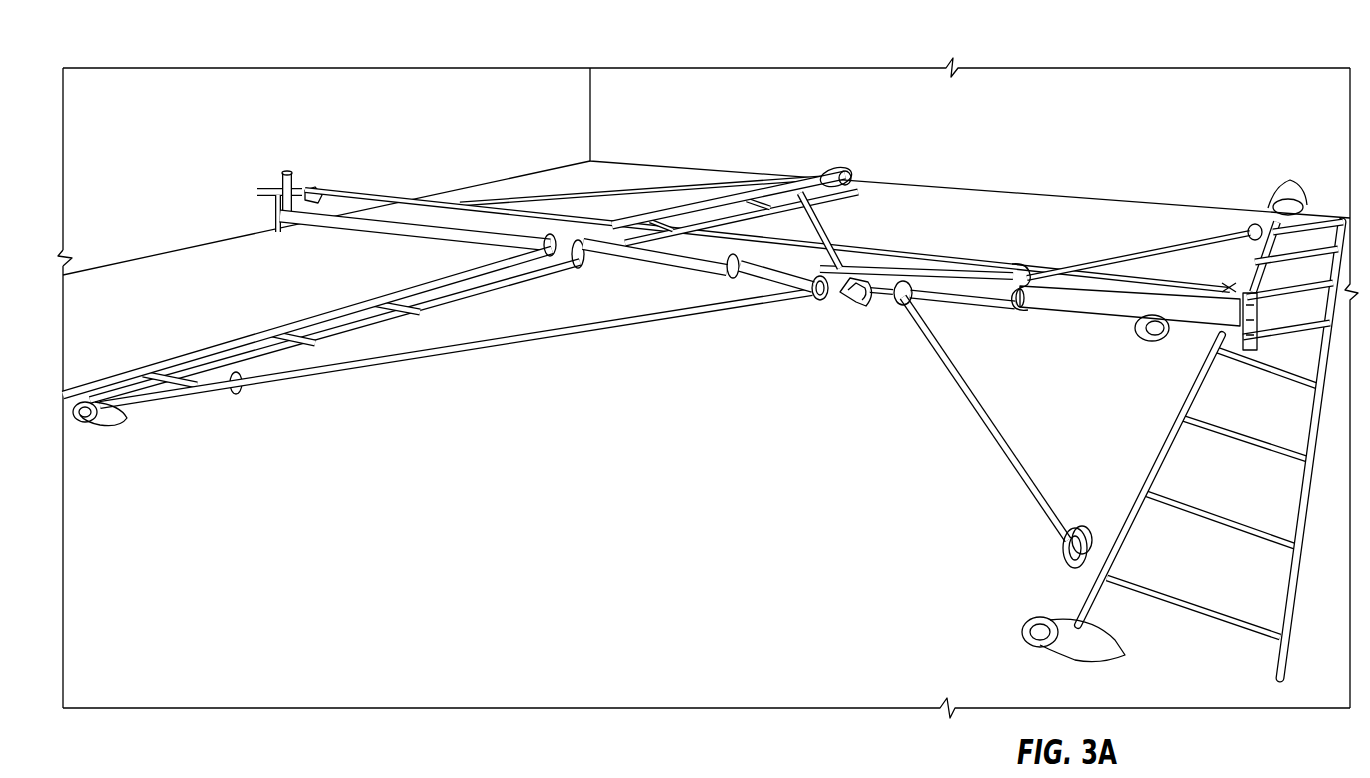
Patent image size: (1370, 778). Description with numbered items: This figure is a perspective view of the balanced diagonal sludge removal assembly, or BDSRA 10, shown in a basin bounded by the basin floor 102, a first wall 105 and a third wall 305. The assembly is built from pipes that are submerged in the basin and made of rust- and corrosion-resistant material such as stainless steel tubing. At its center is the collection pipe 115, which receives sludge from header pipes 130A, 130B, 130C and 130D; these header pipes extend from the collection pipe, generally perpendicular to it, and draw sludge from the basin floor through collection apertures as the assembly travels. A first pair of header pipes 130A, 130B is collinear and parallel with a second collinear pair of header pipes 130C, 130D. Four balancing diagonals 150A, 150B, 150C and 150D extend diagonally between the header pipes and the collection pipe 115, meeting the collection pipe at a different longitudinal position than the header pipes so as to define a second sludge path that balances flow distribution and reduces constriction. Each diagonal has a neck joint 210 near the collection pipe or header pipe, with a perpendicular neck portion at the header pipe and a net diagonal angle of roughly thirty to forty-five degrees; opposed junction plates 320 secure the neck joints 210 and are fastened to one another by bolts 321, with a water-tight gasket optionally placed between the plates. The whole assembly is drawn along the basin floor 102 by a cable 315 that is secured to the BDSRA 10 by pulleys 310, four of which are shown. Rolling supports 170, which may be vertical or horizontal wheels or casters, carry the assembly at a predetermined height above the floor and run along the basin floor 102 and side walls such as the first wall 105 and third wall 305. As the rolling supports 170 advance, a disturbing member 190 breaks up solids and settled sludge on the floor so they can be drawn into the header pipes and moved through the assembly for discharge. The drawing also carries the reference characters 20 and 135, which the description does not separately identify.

The balanced diagonal sludge removal assembly (BDSRA) 10 is at (897, 138).
The frame assembly 20 is at (712, 357).
The basin floor 102 is at (722, 688).
The first wall 105 is at (498, 100).
The third wall 305 is at (802, 100).
The collection pipe 115 is at (960, 266).
The header pipe 130A is at (517, 282).
The header pipe 130B is at (733, 205).
The header pipe 130C is at (1147, 440).
The header pipe 130D is at (1235, 278).
The rail 135 is at (765, 190).
The balancing diagonal 150A is at (650, 315).
The balancing diagonal 150B is at (832, 233).
The balancing diagonal 150C is at (1000, 433).
The balancing diagonal 150D is at (1120, 258).
The rolling supports 170 is at (838, 165).
The disturbing member 190 is at (740, 197).
The neck joint 210 is at (1083, 530).
The pulleys 310 is at (1013, 266).
The cable 315 is at (937, 253).
The junction plates 320 is at (812, 305).
The bolts 321 is at (1067, 572).